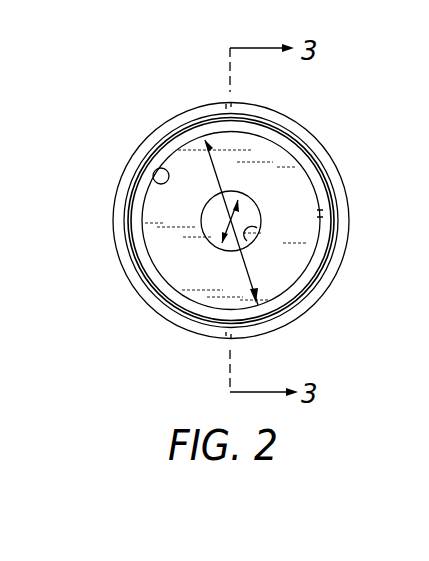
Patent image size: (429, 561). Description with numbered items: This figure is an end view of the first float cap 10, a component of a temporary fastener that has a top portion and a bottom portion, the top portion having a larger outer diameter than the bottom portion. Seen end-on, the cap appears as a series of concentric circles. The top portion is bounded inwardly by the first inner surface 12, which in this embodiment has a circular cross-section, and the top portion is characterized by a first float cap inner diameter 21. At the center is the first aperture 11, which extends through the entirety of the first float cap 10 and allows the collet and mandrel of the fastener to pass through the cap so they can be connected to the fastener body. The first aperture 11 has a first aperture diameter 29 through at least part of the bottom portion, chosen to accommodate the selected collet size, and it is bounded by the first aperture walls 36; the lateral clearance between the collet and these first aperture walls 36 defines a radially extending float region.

The first float cap 10 is at (120, 103).
The first inner surface 12 is at (147, 185).
The first aperture 11 is at (200, 214).
The first float cap inner diameter 21 is at (243, 264).
The first aperture diameter 29 is at (260, 213).
The first aperture walls 36 is at (262, 222).